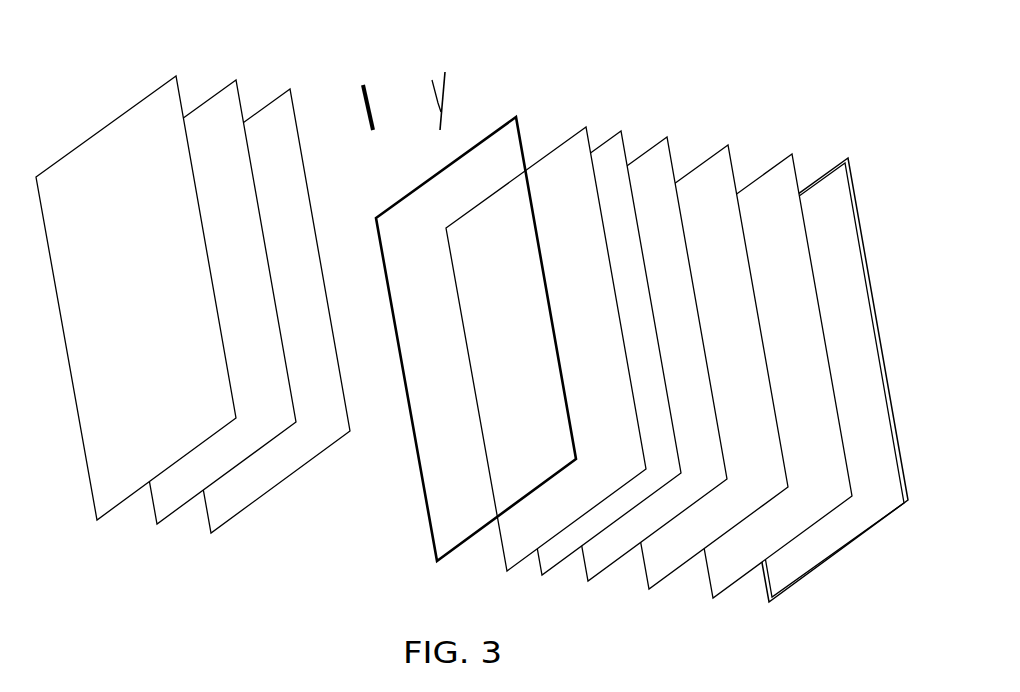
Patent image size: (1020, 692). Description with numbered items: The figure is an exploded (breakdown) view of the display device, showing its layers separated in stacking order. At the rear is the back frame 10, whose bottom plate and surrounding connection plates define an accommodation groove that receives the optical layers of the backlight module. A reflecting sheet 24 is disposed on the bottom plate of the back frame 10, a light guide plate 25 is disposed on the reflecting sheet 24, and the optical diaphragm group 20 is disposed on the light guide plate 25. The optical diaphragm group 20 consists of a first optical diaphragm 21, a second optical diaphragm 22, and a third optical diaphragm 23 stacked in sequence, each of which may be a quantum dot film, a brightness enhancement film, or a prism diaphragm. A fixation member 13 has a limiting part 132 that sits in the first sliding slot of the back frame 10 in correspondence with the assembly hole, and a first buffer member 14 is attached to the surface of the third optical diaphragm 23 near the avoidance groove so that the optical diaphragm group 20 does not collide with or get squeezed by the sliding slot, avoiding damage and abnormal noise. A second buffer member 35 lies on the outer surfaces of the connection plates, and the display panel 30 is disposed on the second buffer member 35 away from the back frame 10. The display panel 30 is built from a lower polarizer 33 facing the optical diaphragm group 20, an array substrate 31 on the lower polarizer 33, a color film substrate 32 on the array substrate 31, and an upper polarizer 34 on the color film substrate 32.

The back frame 10 is at (835, 187).
The fixation member 13 is at (399, 73).
The limiting part 132 is at (364, 85).
The first buffer member 14 is at (444, 84).
The optical diaphragm group 20 is at (586, 306).
The first optical diaphragm 21 is at (647, 168).
The second optical diaphragm 22 is at (608, 158).
The third optical diaphragm 23 is at (560, 168).
The reflecting sheet 24 is at (770, 195).
The light guide plate 25 is at (710, 185).
The display panel 30 is at (193, 275).
The array substrate 31 is at (203, 270).
The color film substrate 32 is at (213, 115).
The lower polarizer 33 is at (272, 115).
The upper polarizer 34 is at (138, 125).
The second buffer member 35 is at (498, 143).